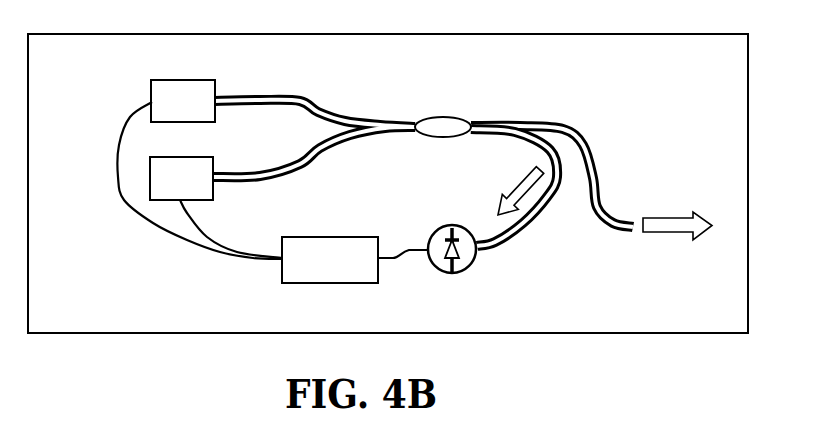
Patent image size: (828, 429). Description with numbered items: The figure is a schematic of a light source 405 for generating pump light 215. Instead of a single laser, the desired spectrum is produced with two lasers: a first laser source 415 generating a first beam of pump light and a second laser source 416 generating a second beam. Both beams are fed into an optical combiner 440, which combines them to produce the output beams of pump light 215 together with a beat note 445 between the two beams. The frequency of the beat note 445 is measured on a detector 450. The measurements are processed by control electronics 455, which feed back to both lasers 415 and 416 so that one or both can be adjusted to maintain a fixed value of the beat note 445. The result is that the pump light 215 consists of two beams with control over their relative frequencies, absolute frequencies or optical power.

The light source 405 is at (87, 333).
The first laser source 415 is at (183, 101).
The second laser source 416 is at (181, 178).
The optical combiner 440 is at (447, 117).
The beat note 445 is at (495, 212).
The detector 450 is at (470, 267).
The control electronics 455 is at (273, 192).
The pump light 215 is at (700, 217).